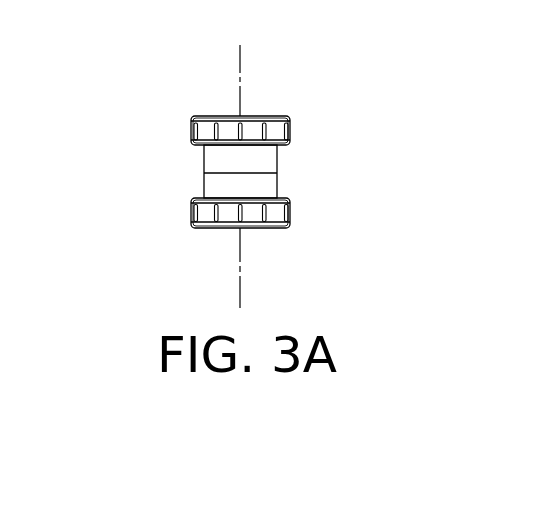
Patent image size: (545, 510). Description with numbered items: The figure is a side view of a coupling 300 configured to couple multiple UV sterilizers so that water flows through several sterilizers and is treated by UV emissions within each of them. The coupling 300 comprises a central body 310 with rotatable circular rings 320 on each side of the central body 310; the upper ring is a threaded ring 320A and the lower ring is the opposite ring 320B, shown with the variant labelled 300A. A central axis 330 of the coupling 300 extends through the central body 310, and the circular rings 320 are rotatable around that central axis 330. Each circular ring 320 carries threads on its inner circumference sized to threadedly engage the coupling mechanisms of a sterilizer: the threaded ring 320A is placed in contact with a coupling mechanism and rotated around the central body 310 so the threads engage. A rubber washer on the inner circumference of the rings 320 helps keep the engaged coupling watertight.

The coupling 300 is at (373, 87).
The coupling assembly variant 300A is at (385, 133).
The central body 310 is at (204, 180).
The circular rings 320 is at (272, 117).
The threaded ring 320A is at (193, 117).
The second nut 320B is at (192, 226).
The central axis 330 is at (240, 57).